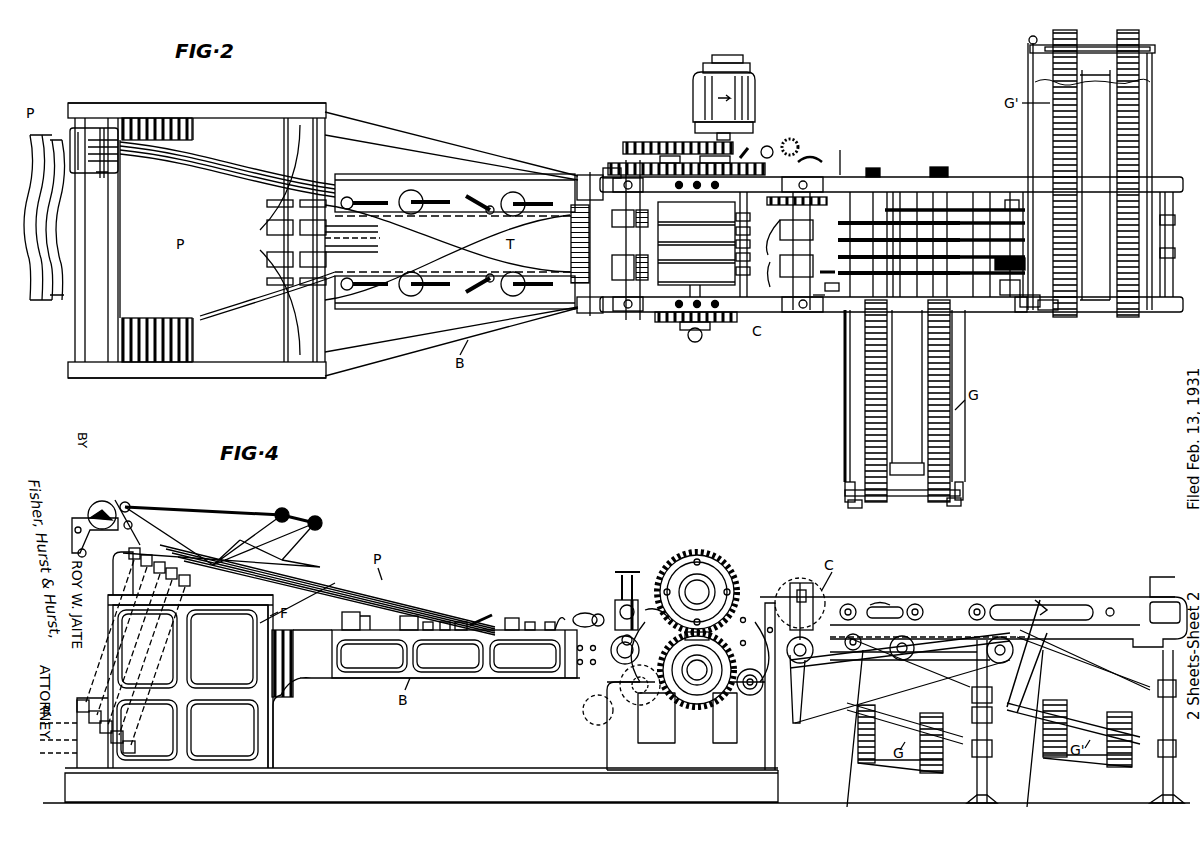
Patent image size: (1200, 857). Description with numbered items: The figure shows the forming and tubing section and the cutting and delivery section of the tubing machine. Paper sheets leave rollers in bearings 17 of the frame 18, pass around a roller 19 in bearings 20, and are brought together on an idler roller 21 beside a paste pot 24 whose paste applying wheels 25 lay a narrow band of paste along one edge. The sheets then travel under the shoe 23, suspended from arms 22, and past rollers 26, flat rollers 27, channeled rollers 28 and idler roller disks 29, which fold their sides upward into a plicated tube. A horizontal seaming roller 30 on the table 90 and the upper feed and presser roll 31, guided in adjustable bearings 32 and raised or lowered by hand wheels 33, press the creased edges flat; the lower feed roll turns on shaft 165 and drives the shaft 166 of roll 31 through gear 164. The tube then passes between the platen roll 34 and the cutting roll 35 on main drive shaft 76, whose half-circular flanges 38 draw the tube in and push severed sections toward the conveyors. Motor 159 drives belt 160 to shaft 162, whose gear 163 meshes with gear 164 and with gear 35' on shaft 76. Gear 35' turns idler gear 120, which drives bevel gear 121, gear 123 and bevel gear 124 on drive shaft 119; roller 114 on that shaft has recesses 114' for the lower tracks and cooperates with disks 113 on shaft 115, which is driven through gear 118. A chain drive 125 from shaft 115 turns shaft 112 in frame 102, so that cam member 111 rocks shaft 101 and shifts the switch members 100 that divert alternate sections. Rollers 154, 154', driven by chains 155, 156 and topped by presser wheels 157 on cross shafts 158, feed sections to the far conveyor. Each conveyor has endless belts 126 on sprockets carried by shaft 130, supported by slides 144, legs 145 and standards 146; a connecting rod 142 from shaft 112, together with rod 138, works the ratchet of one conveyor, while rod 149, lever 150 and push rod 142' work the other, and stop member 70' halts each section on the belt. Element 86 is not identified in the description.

In FIG. 4, the bearings 17 is at (83, 700).
In FIG. 4, the frame 18 is at (270, 718).
In FIG. 2, the roller 19 is at (196, 126).
In FIG. 4, the bearings 20 is at (185, 585).
In FIG. 2, the idler roller 21 is at (136, 370).
In FIG. 4, the idler roller 21 is at (128, 502).
In FIG. 2, the arms 22 is at (245, 105).
In FIG. 4, the arms 22 is at (290, 513).
In FIG. 2, the shoe 23 is at (352, 243).
In FIG. 4, the shoe 23 is at (335, 565).
In FIG. 2, the paste pot 24 is at (90, 128).
In FIG. 4, the paste pot 24 is at (76, 517).
In FIG. 2, the paste applying wheels 25 is at (99, 165).
In FIG. 4, the paste applying wheels 25 is at (103, 500).
In FIG. 2, the rollers 26 is at (348, 292).
In FIG. 4, the rollers 26 is at (342, 620).
In FIG. 2, the flat rollers 27 is at (411, 296).
In FIG. 4, the flat rollers 27 is at (400, 620).
In FIG. 2, the channeled rollers 28 is at (486, 290).
In FIG. 4, the channeled rollers 28 is at (485, 620).
In FIG. 2, the idler roller disks 29 is at (514, 296).
In FIG. 4, the idler roller disks 29 is at (520, 620).
In FIG. 2, the horizontal roller 30 is at (572, 247).
In FIG. 4, the horizontal roller 30 is at (580, 615).
In FIG. 2, the upper feed and presser roll 31 is at (617, 240).
In FIG. 4, the upper feed and presser roll 31 is at (631, 632).
In FIG. 2, the adjustable bearings 32 is at (647, 245).
In FIG. 4, the adjustable bearings 32 is at (615, 605).
In FIG. 2, the hand wheels 33 is at (628, 312).
In FIG. 4, the hand wheels 33 is at (616, 578).
In FIG. 2, the platen roll 34 is at (690, 281).
In FIG. 4, the cutting roll 35 is at (752, 671).
In FIG. 2, the gear 35' is at (717, 157).
In FIG. 2, the half-circular narrow flanges 38 is at (696, 243).
In FIG. 2, the stop member 70' is at (1156, 267).
In FIG. 4, the stop member 70' is at (993, 717).
In FIG. 4, the main drive shaft 76 is at (697, 690).
In FIG. 2, the drive gear 86 is at (697, 335).
In FIG. 4, the drive gear 86 is at (705, 585).
In FIG. 4, the table 90 is at (552, 609).
In FIG. 2, the switch members 100 is at (845, 154).
In FIG. 2, the rock shaft 101 is at (845, 291).
In FIG. 2, the frame 102 is at (1095, 312).
In FIG. 4, the frame 102 is at (1017, 597).
In FIG. 2, the cam member 111 is at (842, 275).
In FIG. 4, the cam member 111 is at (878, 598).
In FIG. 2, the rotatable shaft 112 is at (898, 192).
In FIG. 2, the drive wheels or disks 113 is at (780, 312).
In FIG. 4, the drive wheels or disks 113 is at (788, 592).
In FIG. 2, the roller 114 is at (787, 244).
In FIG. 2, the peripheral recesses 114' is at (827, 315).
In FIG. 2, the shaft 115 is at (761, 277).
In FIG. 4, the shaft 115 is at (820, 585).
In FIG. 2, the gear 118 is at (791, 197).
In FIG. 4, the drive shaft 119 is at (805, 680).
In FIG. 2, the idler gear 120 is at (751, 145).
In FIG. 2, the bevel gear 121 is at (767, 146).
In FIG. 2, the beveled gear 123 is at (790, 139).
In FIG. 2, the beveled gear 124 is at (810, 155).
In FIG. 2, the chain drive 125 is at (836, 185).
In FIG. 2, the endless belts 126 is at (935, 378).
In FIG. 4, the endless belts 126 is at (1060, 708).
In FIG. 2, the shaft 130 is at (905, 496).
In FIG. 2, the rod 138 is at (845, 430).
In FIG. 4, the connecting rod 142 is at (997, 664).
In FIG. 4, the push rod 142' is at (1085, 660).
In FIG. 2, the slides 144 is at (965, 450).
In FIG. 4, the legs 145 is at (1032, 790).
In FIG. 4, the standards 146 is at (1160, 773).
In FIG. 2, the rod 149 is at (972, 312).
In FIG. 4, the rod 149 is at (965, 612).
In FIG. 4, the lever 150 is at (1048, 602).
In FIG. 2, the roller 154 is at (955, 219).
In FIG. 2, the roller 154' is at (1035, 321).
In FIG. 4, the roller 154' is at (1004, 665).
In FIG. 2, the chain 155 is at (868, 192).
In FIG. 4, the chain 155 is at (900, 678).
In FIG. 2, the chain 156 is at (958, 190).
In FIG. 4, the chain 156 is at (935, 655).
In FIG. 2, the presser wheels 157 is at (850, 318).
In FIG. 2, the cross shafts 158 is at (1003, 312).
In FIG. 2, the motor 159 is at (755, 108).
In FIG. 2, the belt 160 is at (690, 142).
In FIG. 2, the shaft 162 is at (655, 165).
In FIG. 2, the gear 163 is at (674, 157).
In FIG. 4, the gear 163 is at (599, 710).
In FIG. 2, the gear 164 is at (615, 170).
In FIG. 4, the gear 164 is at (679, 631).
In FIG. 4, the shaft 165 is at (618, 647).
In FIG. 4, the shaft 166 is at (603, 582).